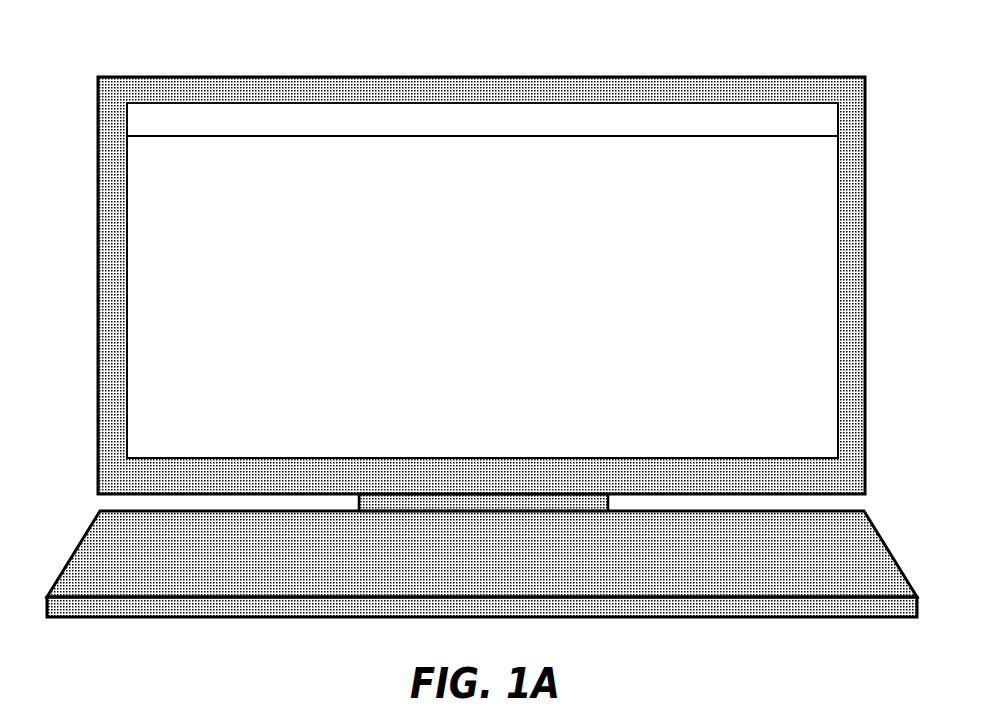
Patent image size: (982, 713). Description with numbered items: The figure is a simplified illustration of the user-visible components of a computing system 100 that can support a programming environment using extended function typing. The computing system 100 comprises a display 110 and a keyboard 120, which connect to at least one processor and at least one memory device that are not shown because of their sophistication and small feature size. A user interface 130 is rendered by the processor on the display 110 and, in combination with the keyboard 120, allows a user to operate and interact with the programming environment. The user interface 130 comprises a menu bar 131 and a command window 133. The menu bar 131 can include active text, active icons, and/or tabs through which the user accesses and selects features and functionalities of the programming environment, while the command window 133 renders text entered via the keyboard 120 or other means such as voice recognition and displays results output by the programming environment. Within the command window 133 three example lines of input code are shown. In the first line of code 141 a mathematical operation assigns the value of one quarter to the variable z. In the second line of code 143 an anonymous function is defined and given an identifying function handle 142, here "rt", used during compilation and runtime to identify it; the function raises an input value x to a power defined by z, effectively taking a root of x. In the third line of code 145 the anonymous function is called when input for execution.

The computing system 100 is at (477, 308).
The display 110 is at (501, 265).
The keyboard 120 is at (86, 532).
The user interface 130 is at (482, 247).
The menu bar 131 is at (282, 131).
The command window 133 is at (832, 446).
The first line of code 141 is at (293, 165).
The function handle 142 is at (189, 217).
The second line of code 143 is at (352, 222).
The third line of code 145 is at (315, 280).